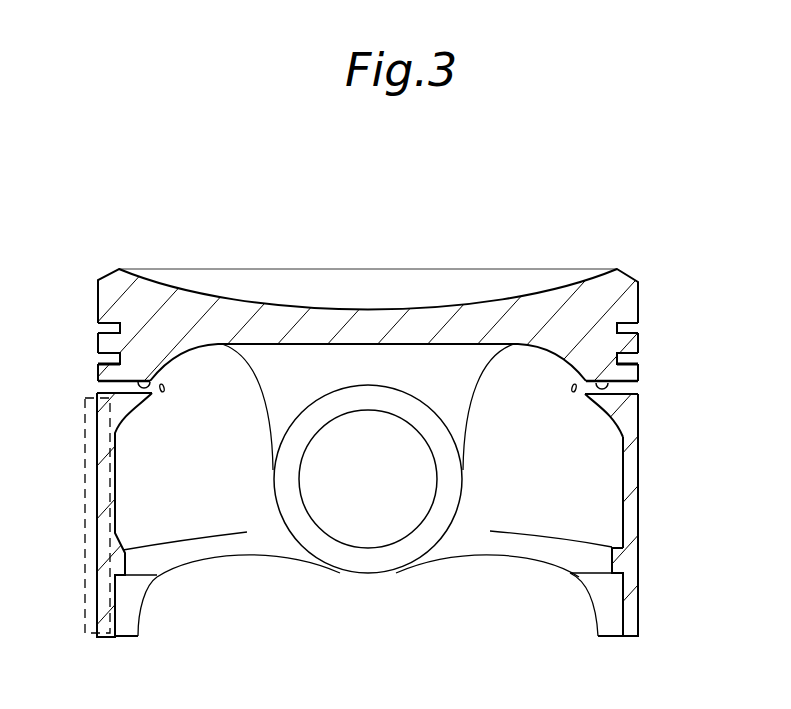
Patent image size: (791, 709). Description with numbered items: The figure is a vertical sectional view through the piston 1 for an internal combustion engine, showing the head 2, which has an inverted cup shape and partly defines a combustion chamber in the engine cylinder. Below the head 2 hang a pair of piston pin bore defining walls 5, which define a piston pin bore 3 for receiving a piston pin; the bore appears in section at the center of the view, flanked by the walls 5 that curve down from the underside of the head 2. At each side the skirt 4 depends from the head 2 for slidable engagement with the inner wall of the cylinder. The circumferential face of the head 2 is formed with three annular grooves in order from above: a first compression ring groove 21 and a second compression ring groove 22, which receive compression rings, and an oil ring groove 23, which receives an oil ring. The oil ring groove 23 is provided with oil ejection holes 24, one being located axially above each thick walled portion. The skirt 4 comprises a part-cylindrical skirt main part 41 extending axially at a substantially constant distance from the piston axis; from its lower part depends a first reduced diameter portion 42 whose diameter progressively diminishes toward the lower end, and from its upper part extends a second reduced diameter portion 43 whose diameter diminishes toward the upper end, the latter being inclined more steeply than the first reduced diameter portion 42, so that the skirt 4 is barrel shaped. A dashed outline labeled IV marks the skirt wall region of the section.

The piston 1 is at (424, 243).
The head 2 is at (633, 265).
The piston pin bore 3 is at (368, 540).
The skirt 4 is at (413, 532).
The piston pin bore defining wall 5 is at (215, 552).
The first compression ring groove 21 is at (97, 330).
The second compression ring groove 22 is at (97, 363).
The oil ring groove 23 is at (10, 389).
The oil ejection hole 24 is at (145, 380).
The skirt main part 41 is at (640, 491).
The first reduced diameter portion 42 is at (640, 575).
The second reduced diameter portion 43 is at (640, 413).
The detail view IV region IV is at (84, 549).